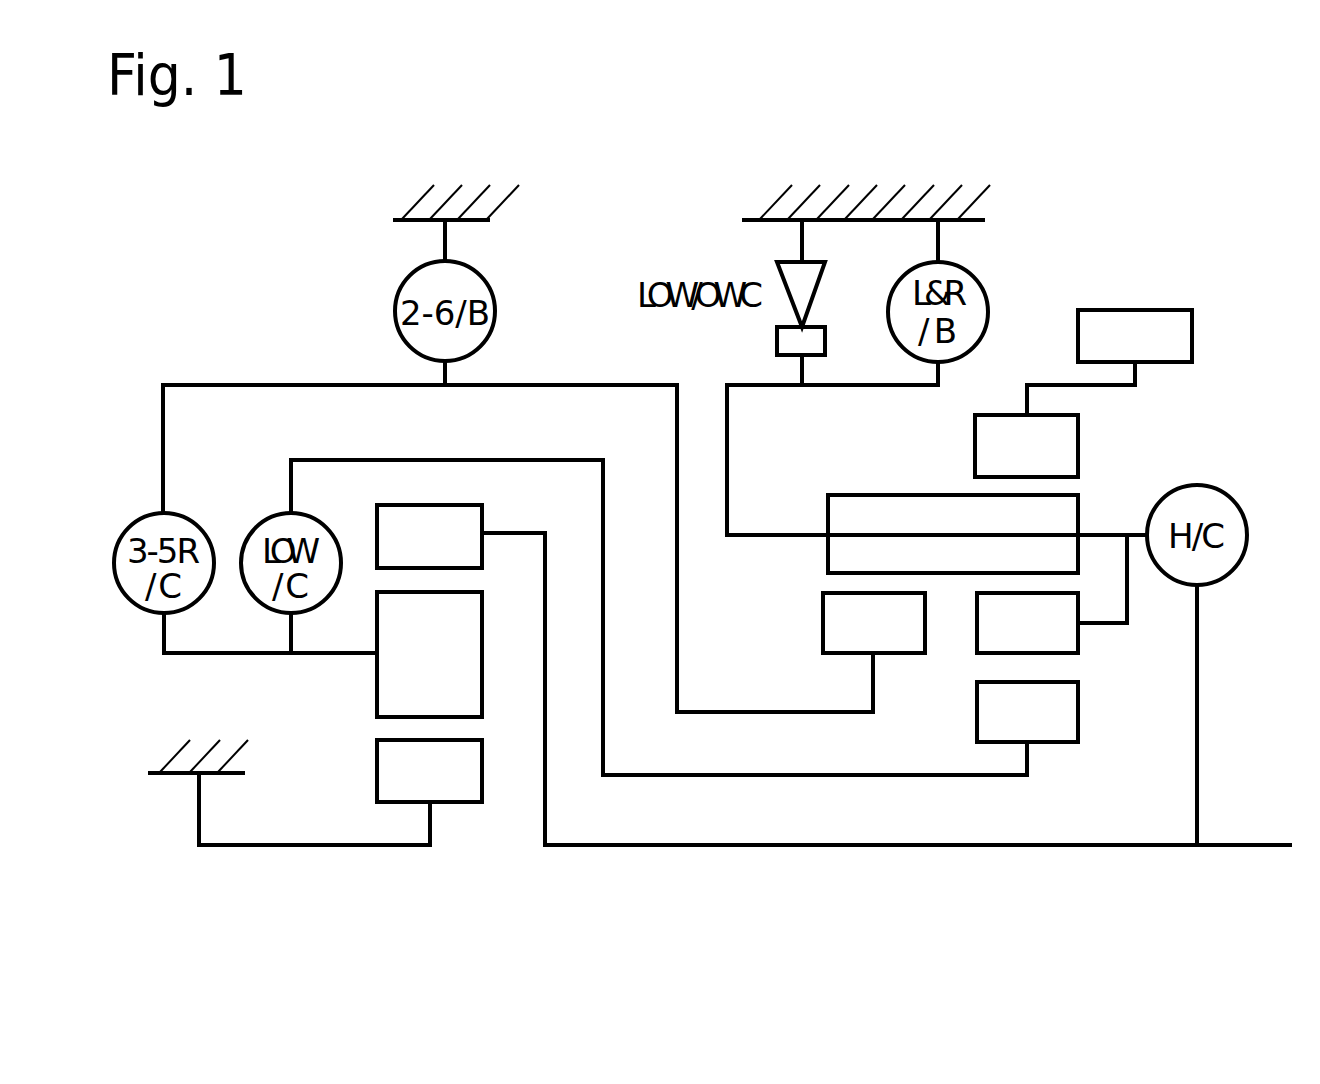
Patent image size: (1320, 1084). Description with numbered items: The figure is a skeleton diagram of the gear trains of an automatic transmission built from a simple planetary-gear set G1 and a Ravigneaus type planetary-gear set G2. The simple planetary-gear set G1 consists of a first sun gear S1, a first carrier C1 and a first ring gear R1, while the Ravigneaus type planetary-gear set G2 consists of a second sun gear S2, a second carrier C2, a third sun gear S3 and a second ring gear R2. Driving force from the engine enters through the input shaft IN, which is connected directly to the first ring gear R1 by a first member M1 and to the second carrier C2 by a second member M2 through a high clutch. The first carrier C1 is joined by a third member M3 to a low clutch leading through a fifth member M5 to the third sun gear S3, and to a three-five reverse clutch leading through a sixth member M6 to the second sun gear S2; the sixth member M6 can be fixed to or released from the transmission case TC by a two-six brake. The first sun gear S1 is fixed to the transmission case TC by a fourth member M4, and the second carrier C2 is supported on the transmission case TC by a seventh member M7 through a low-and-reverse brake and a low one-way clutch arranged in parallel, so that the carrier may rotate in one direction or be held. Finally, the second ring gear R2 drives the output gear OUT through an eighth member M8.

The first member M1 is at (707, 845).
The second member M2 is at (1198, 663).
The third member M3 is at (328, 655).
The fourth member M4 is at (329, 846).
The fifth member M5 is at (707, 775).
The sixth member M6 is at (707, 712).
The seventh member M7 is at (729, 417).
The eighth member M8 is at (1050, 385).
The simple planetary-gear set G1 is at (470, 804).
The Ravigneaus type planetary-gear set G2 is at (1081, 736).
The transmission case TC is at (490, 220).
The first carrier C1 is at (429, 654).
The second carrier C2 is at (827, 515).
The first ring gear R1 is at (429, 536).
The second ring gear R2 is at (1026, 446).
The first sun gear S1 is at (429, 771).
The second sun gear S2 is at (874, 623).
The third sun gear S3 is at (1027, 712).
The output gear OUT is at (1135, 336).
The input shaft IN is at (1244, 818).